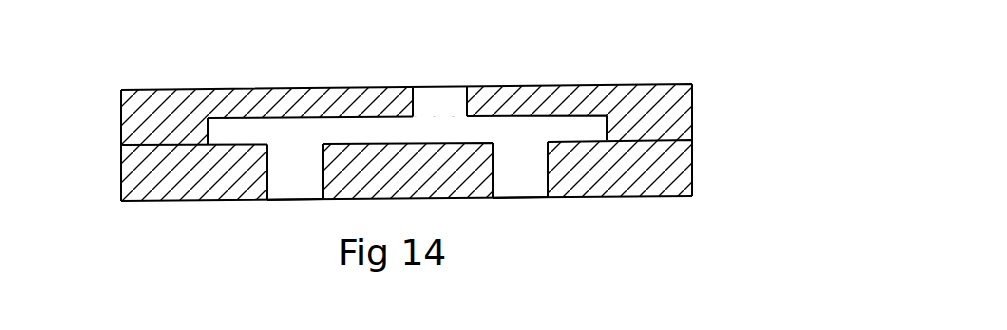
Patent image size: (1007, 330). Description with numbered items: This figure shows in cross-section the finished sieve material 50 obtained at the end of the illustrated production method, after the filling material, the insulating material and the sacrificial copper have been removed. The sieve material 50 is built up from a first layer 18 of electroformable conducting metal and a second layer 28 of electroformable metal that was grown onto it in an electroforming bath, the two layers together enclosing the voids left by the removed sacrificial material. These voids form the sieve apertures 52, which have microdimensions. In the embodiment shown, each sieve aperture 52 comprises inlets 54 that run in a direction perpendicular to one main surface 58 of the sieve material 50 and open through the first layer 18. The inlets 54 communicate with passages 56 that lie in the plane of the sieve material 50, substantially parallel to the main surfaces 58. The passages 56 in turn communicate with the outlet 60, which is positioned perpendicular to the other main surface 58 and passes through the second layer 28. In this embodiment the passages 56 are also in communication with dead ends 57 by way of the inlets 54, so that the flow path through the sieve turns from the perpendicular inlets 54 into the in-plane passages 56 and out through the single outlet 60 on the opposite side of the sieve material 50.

The first layer 18 is at (690, 162).
The second layer 28 is at (690, 104).
The sieve material 50 is at (90, 88).
The sieve apertures 52 is at (545, 208).
The inlets 54 is at (288, 188).
The passages 56 is at (363, 128).
The dead ends 57 is at (258, 128).
The main surface 58 is at (135, 90).
The outlet 60 is at (433, 106).